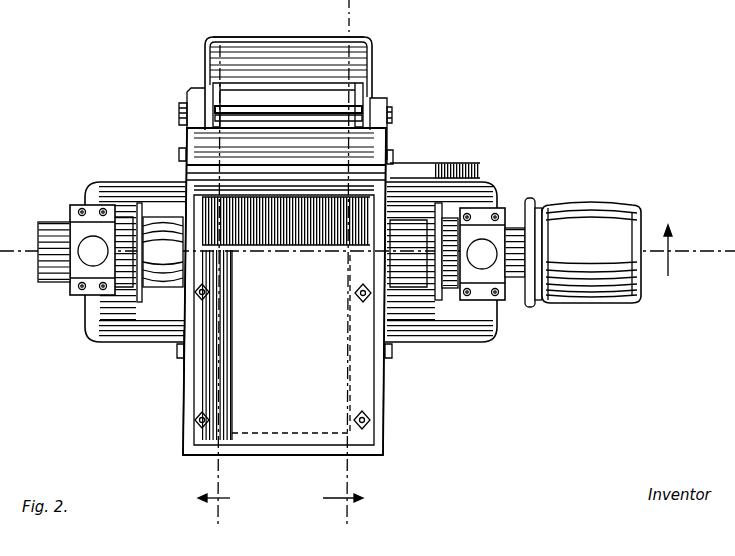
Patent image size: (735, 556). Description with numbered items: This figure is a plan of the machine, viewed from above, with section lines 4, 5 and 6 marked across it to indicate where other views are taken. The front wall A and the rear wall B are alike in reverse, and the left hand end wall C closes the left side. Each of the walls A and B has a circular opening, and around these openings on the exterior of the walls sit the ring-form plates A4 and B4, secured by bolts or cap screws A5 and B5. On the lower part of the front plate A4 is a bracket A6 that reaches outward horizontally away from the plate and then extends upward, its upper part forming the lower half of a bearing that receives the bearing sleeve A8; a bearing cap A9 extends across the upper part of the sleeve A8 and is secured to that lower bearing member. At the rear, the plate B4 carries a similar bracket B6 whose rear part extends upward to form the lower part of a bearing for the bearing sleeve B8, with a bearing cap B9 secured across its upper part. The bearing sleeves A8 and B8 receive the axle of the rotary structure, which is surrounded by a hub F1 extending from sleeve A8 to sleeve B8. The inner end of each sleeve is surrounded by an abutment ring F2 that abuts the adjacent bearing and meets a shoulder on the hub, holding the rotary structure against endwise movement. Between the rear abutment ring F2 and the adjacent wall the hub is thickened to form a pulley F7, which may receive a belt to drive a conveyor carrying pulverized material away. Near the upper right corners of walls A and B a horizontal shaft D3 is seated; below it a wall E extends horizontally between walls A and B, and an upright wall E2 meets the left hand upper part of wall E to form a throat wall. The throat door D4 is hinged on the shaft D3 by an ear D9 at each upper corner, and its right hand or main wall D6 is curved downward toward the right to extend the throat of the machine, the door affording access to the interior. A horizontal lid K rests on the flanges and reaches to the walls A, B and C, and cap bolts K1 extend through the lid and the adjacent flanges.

The front wall A is at (382, 402).
The ring-form plate A4 is at (418, 343).
The bolts or cap screws A5 is at (394, 157).
The bracket A6 is at (491, 324).
The bearing sleeve A8 is at (528, 198).
The bearing cap A9 is at (513, 227).
The rear wall B is at (182, 440).
The ring-form plate B4 is at (181, 361).
The bolts or cap screws B5 is at (178, 155).
The bracket B6 is at (104, 181).
The bearing sleeve B8 is at (53, 220).
The bearing cap B9 is at (80, 236).
The left hand end wall C is at (256, 456).
The horizontal shaft D3 is at (178, 111).
The throat door D4 is at (288, 70).
The main wall of door D6 is at (232, 38).
The ear D9 is at (203, 100).
The wall E is at (284, 143).
The upright wall E2 is at (277, 190).
The hub F1 is at (429, 181).
The abutment ring F2 is at (122, 323).
The pulley F7 is at (200, 270).
The horizontal lid K is at (286, 318).
The cap bolts K1 is at (206, 298).
The section line 4- 4 is at (367, 138).
The section line 5- 5 is at (214, 300).
The section line 6- 6 is at (343, 300).